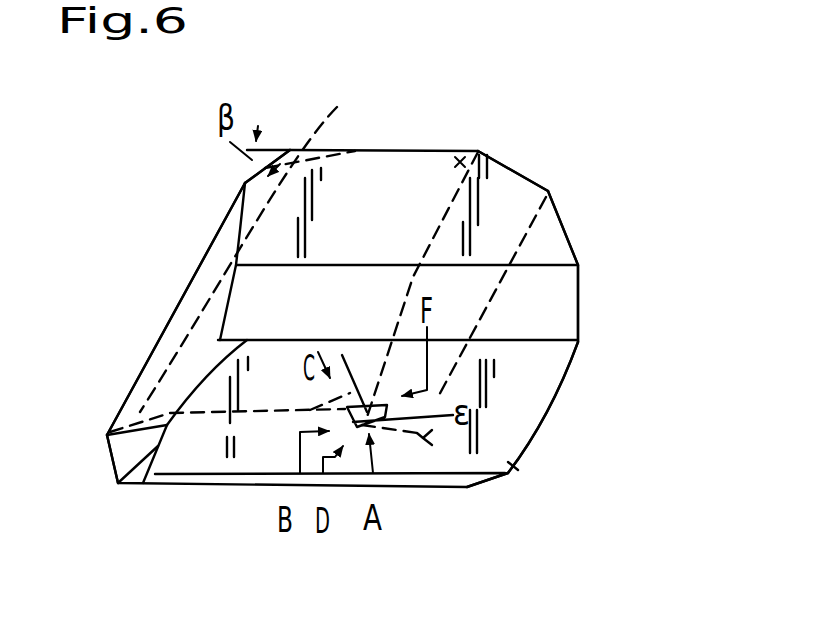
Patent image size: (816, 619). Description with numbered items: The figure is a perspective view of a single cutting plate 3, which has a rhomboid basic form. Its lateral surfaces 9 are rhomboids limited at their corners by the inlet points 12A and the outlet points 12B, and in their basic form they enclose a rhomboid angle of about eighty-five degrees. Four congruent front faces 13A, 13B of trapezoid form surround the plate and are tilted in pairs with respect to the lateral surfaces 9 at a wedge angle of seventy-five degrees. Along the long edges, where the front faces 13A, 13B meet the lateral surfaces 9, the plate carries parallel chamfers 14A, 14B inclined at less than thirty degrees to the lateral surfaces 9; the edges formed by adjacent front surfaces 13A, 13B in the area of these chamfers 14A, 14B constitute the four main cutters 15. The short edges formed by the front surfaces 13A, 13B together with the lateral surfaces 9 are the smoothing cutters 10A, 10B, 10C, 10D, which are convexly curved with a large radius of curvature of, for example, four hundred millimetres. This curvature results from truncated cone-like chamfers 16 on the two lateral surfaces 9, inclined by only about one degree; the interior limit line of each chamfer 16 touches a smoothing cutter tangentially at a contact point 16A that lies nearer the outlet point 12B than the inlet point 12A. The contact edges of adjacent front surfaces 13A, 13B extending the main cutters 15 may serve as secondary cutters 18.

The cutting plate 3 is at (478, 72).
The lateral surface 9 is at (357, 187).
The smoothing cutter 10A is at (153, 447).
The smoothing cutter 10B is at (523, 452).
The smoothing cutter 10C is at (428, 150).
The smoothing cutter 10D is at (200, 413).
The inlet point 12A is at (291, 149).
The outlet point 12B is at (479, 152).
The front face 13A is at (280, 227).
The front face 13B is at (213, 262).
The chamfer 14A is at (560, 295).
The chamfer 14B is at (153, 367).
The main cutter 15 is at (243, 180).
The truncated cone-like chamfer 16 is at (576, 515).
The contact point 16A is at (107, 437).
The secondary cutter 18 is at (228, 200).